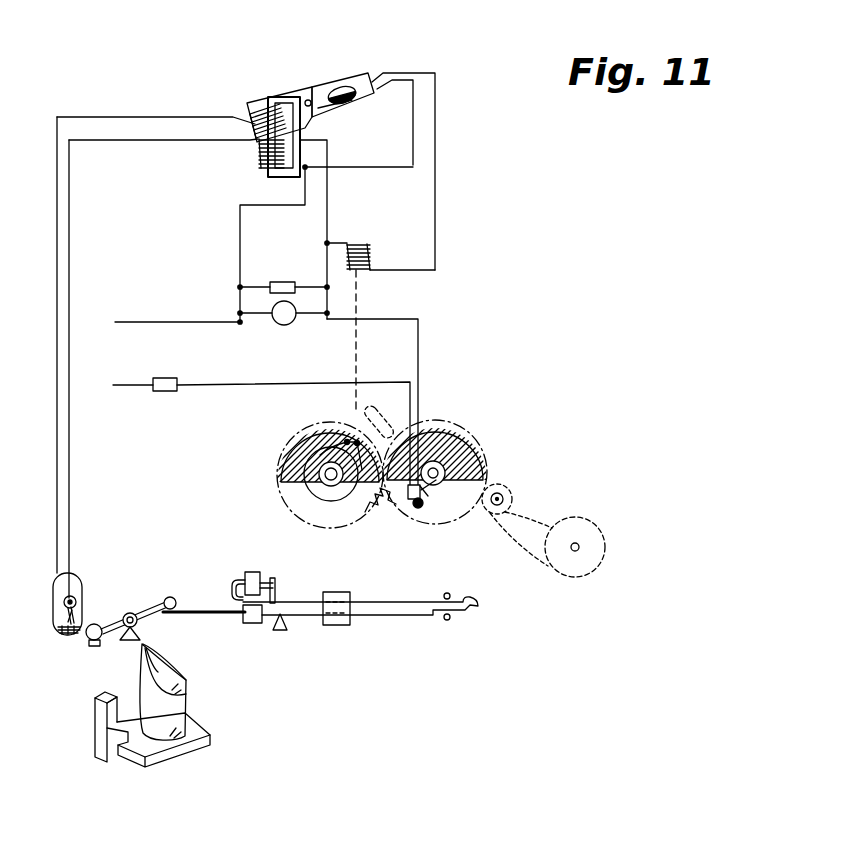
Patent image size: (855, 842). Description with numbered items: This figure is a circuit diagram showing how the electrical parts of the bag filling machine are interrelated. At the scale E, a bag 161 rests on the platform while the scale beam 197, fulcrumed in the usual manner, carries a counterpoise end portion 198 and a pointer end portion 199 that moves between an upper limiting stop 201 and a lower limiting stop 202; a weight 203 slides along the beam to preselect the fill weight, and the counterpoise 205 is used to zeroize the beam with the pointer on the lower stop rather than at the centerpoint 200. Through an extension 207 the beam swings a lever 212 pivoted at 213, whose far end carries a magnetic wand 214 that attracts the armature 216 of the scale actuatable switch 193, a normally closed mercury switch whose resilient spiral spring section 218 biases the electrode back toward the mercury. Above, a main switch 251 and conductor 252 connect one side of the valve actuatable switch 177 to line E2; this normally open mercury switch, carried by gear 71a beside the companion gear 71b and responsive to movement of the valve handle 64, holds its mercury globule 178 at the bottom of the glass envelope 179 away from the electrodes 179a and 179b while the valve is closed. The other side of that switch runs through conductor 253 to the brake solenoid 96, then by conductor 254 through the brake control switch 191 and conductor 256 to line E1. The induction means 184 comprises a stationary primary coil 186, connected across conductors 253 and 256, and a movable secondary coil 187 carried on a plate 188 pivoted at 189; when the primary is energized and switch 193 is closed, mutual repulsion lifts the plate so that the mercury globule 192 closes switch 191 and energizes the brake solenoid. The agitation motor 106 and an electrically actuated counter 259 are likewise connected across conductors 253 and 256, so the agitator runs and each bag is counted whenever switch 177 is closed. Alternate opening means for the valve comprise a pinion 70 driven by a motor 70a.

The conductor 254 is at (435, 138).
The conductor 256 is at (389, 160).
The line E1 is at (103, 318).
The line E2 is at (122, 381).
The induction means 184 is at (258, 152).
The stationary primary coil 186 is at (262, 168).
The movable secondary coil 187 is at (257, 118).
The brake solenoid switch 191 is at (345, 80).
The mercury globule 192 is at (352, 102).
The plate 188 is at (325, 113).
The pivot 189 is at (308, 100).
The brake solenoid 96 is at (378, 249).
The counter 259 is at (283, 269).
The agitation motor 106 is at (298, 329).
The main switch 251 is at (188, 418).
The conductor 252 is at (315, 378).
The conductor 253 is at (418, 350).
The handle 64 is at (392, 415).
The cam wheel 71b is at (284, 497).
The gear 71a is at (445, 424).
The valve actuatable switch means 177 is at (438, 490).
The mercury globule 178 is at (417, 507).
The electrode 179a is at (411, 490).
The glass envelope 179 is at (427, 490).
The electrode 179b is at (431, 487).
The pinion 70 is at (513, 494).
The motor 70a is at (602, 551).
The scale actuatable switch 193 is at (71, 671).
The resilient spiral spring section 218 is at (74, 598).
The armature 216 is at (74, 610).
The pivot 213 is at (128, 616).
The lever 212 is at (150, 605).
The magnetic wand 214 is at (97, 646).
The extension 207 is at (222, 617).
The counterpoise 205 is at (251, 571).
The scale beam 197 is at (374, 616).
The counterpoise end portion 198 is at (267, 597).
The weight 203 is at (341, 592).
The upper limiting stop 201 is at (449, 593).
The lower limiting stop 202 is at (447, 620).
The pointer end portion 199 is at (592, 614).
The centerpoint 200 is at (583, 664).
The bag 161 is at (168, 698).
The scale E is at (195, 745).